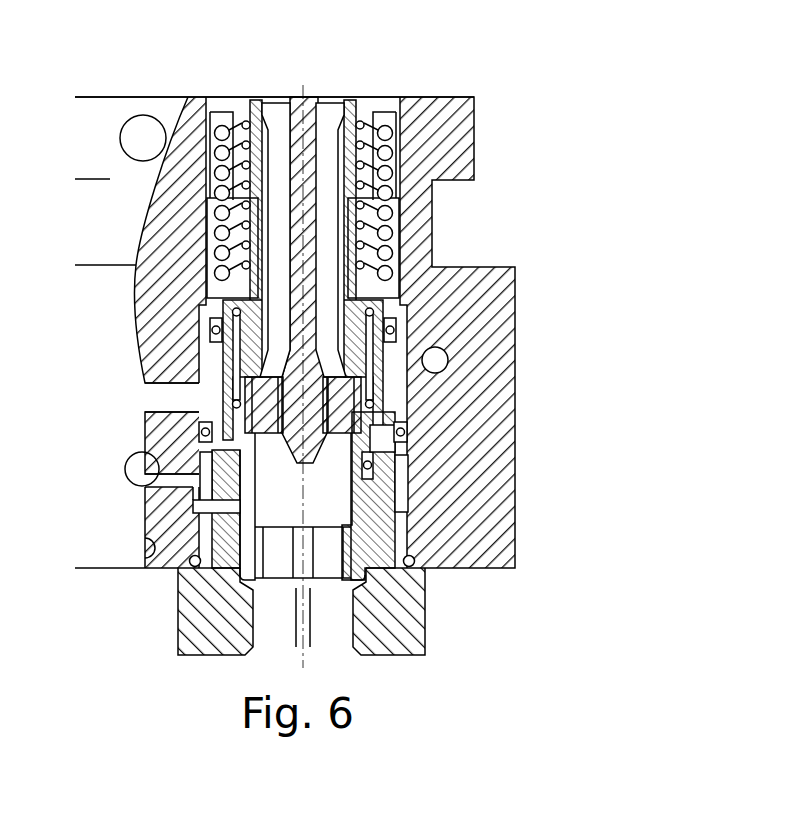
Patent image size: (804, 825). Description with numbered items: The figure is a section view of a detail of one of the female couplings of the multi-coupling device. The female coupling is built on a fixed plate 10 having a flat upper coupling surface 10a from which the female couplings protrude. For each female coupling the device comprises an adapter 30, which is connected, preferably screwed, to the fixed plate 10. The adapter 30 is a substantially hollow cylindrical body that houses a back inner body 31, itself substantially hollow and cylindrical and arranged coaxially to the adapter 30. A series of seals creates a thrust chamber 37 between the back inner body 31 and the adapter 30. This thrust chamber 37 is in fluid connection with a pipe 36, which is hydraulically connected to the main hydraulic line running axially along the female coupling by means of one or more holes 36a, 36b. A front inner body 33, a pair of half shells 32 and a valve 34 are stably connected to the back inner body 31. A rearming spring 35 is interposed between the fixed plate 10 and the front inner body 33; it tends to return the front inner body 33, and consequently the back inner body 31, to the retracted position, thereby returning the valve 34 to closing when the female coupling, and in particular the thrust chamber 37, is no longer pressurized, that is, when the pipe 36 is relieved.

The fixed plate 10 is at (503, 538).
The flat upper coupling surface 10a is at (441, 97).
The adapter 30 is at (411, 615).
The back inner body 31 is at (375, 430).
The pair of half shells 32 is at (340, 395).
The front inner body 33 is at (390, 348).
The valve 34 is at (320, 258).
The rearming spring 35 is at (205, 210).
The pipe 36 is at (170, 397).
The hole 36a is at (175, 484).
The hole 36b is at (212, 507).
The thrust chamber 37 is at (200, 439).